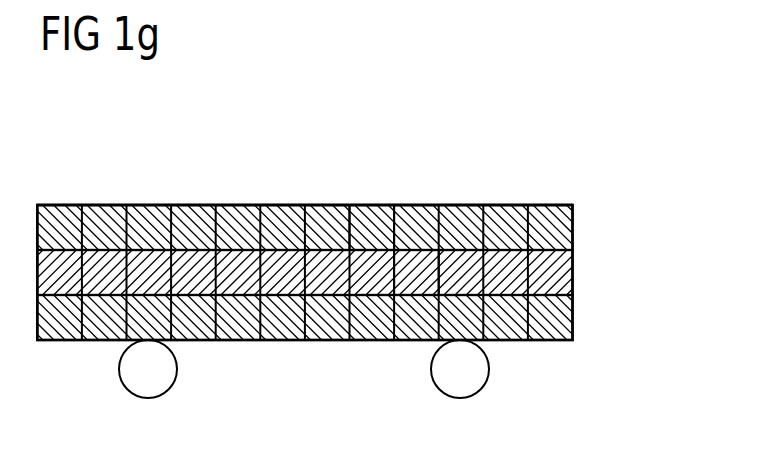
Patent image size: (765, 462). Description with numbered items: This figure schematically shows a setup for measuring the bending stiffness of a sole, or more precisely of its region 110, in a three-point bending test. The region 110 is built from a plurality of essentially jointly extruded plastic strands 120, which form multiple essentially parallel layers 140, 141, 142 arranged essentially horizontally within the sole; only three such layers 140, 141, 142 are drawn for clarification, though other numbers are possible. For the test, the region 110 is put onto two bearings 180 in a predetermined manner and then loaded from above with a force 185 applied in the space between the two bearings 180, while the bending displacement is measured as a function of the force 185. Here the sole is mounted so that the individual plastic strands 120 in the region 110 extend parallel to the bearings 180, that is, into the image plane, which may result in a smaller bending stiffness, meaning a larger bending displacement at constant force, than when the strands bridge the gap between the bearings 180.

The region 110 is at (353, 215).
The plastic strands 120 is at (417, 258).
The layer 140 is at (615, 230).
The layer 141 is at (615, 230).
The layer 142 is at (353, 318).
The bearings 180 is at (406, 380).
The force 185 is at (313, 167).